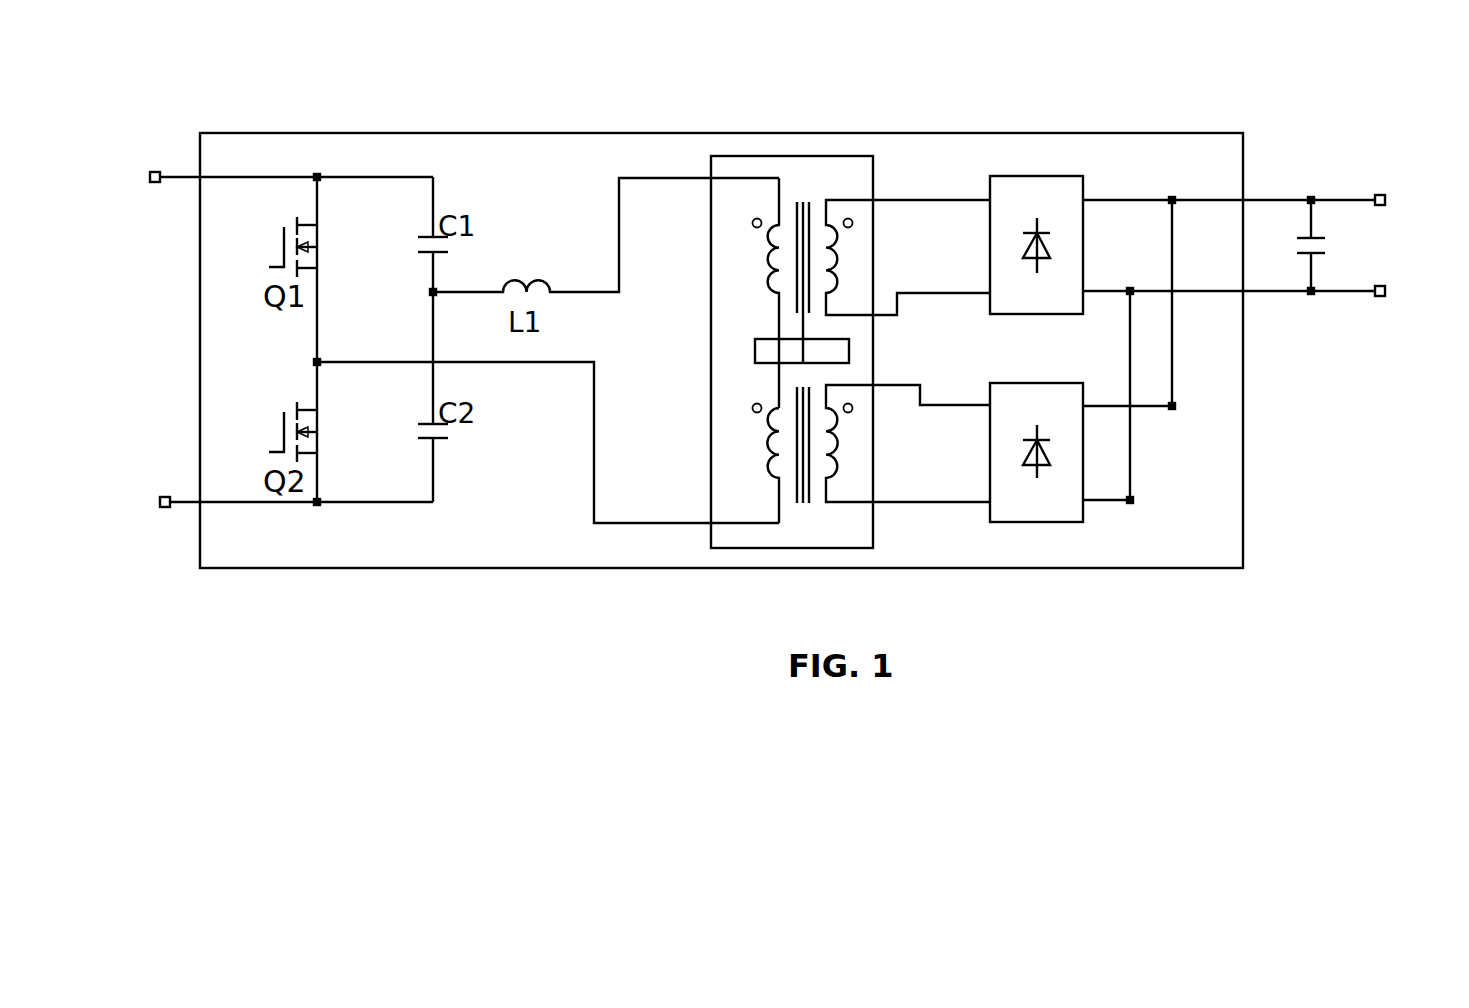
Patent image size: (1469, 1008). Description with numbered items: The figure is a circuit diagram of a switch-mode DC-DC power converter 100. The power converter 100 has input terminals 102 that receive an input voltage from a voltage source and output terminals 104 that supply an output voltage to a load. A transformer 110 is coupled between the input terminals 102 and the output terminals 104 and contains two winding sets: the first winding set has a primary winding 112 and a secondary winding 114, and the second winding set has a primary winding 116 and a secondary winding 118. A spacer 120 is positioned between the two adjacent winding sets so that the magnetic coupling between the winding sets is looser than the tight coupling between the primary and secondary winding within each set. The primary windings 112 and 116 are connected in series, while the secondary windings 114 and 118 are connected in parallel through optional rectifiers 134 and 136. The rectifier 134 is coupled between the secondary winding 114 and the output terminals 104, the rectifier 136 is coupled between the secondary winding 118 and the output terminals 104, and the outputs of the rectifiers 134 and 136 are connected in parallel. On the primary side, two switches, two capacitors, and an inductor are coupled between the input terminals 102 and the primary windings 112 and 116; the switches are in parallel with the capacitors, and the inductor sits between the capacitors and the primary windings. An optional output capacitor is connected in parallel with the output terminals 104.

The switch-mode DC-DC power converter 100 is at (300, 76).
The input terminal 102 is at (156, 183).
The output terminal 104 is at (1378, 195).
The transformer 110 is at (814, 350).
The primary winding 112 is at (738, 232).
The secondary winding 114 is at (838, 257).
The primary winding 116 is at (762, 447).
The secondary winding 118 is at (838, 447).
The spacer 120 is at (742, 346).
The rectifier 134 is at (1078, 190).
The rectifier 136 is at (1083, 517).